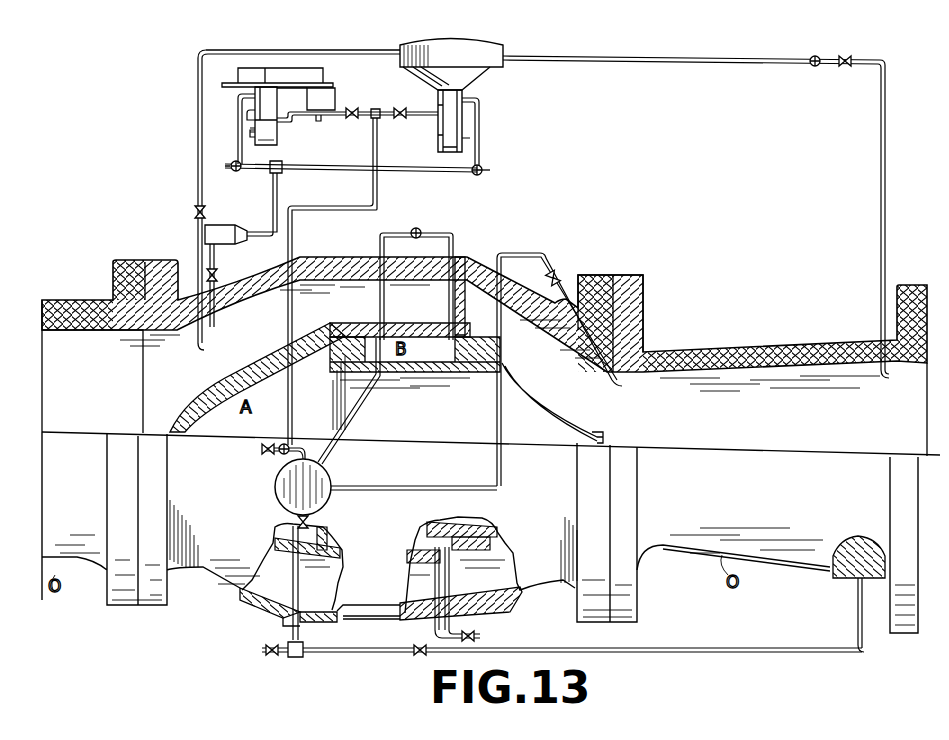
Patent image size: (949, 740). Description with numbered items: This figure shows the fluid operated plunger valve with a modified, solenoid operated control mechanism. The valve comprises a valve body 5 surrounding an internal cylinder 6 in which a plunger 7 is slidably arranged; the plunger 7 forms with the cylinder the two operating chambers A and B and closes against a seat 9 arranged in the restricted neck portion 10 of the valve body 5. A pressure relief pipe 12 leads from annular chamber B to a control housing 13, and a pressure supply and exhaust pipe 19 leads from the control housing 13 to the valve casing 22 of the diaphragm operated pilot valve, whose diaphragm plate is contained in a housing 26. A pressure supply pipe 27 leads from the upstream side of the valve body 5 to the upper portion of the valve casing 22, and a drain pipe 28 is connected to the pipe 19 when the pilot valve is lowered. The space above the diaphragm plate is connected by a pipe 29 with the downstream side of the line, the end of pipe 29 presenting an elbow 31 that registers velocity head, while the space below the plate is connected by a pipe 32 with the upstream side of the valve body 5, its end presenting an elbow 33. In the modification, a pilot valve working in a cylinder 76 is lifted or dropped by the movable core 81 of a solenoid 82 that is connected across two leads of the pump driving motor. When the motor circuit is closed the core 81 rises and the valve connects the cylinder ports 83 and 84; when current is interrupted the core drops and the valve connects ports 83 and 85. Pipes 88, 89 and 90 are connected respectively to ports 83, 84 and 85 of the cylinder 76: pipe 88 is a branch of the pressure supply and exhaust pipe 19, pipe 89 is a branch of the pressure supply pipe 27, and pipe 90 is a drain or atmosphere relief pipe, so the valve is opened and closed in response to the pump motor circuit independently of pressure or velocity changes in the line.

The valve body 5 is at (342, 258).
The internal cylinder 6 is at (248, 368).
The plunger 7 is at (520, 360).
The seat 9 is at (588, 370).
The restricted neck portion 10 is at (648, 348).
The pressure relief pipe 12 is at (356, 405).
The control housing 13 is at (275, 488).
The pressure supply and exhaust pipe 19 is at (290, 398).
The valve casing 22 is at (450, 121).
The housing 26 is at (483, 45).
The pressure supply pipe 27 is at (402, 170).
The drain pipe 28 is at (482, 152).
The pipe 29 is at (638, 62).
The elbow 31 is at (880, 380).
The pipe 32 is at (340, 50).
The elbow 33 is at (199, 345).
The cylinder 76 is at (281, 116).
The movable core 81 is at (326, 119).
The solenoid 82 is at (335, 96).
The cylinder port 83 is at (250, 100).
The cylinder port 84 is at (240, 88).
The cylinder port 85 is at (248, 140).
The pipe 88 is at (292, 122).
The pipe 89 is at (246, 120).
The drain or atmosphere relief pipe 90 is at (248, 132).